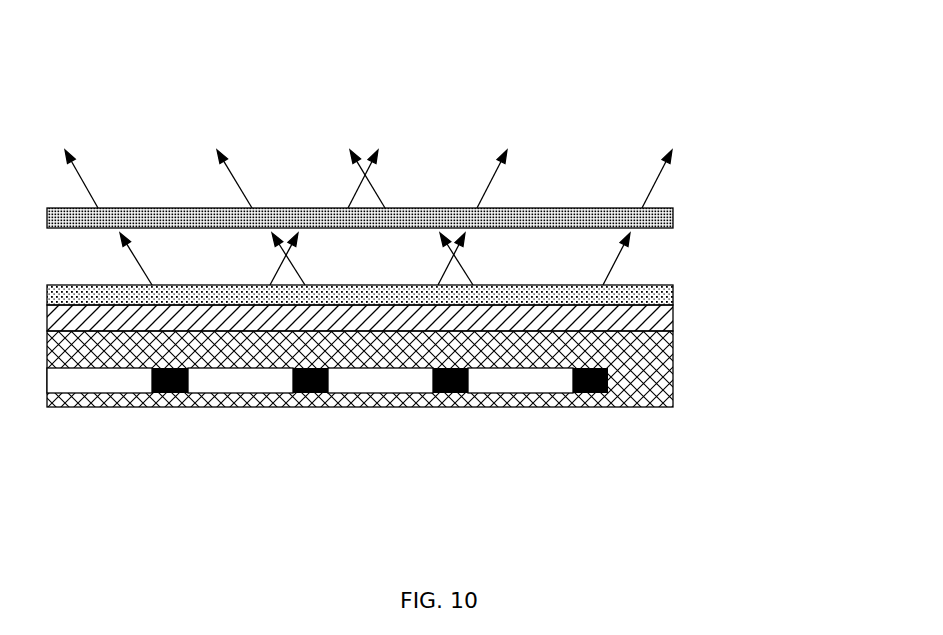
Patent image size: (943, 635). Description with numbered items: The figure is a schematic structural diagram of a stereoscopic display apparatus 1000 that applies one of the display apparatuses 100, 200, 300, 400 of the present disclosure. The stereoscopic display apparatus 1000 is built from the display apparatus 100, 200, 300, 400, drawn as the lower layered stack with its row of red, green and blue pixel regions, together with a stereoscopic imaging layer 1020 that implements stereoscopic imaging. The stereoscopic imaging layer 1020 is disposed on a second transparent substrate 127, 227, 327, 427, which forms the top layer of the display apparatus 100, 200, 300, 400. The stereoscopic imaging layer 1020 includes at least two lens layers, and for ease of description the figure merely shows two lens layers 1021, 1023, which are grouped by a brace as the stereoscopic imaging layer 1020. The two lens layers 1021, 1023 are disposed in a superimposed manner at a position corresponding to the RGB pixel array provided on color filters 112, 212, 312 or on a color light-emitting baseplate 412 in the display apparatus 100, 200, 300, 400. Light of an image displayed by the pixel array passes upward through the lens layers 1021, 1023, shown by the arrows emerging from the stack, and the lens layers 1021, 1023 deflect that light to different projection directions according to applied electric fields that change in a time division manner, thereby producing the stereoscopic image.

The stereoscopic display apparatus 1000 is at (397, 44).
The stereoscopic imaging layer 1020 is at (784, 234).
The lens layer 1021 is at (673, 216).
The lens layer 1023 is at (673, 290).
The display apparatus 100 is at (360, 403).
The display apparatus 200 is at (360, 403).
The display apparatus 300 is at (360, 403).
The display apparatus 400 is at (332, 407).
The second transparent substrate 127 is at (357, 435).
The second transparent substrate 227 is at (357, 435).
The second transparent substrate 327 is at (357, 435).
The second transparent substrate 427 is at (72, 372).
The light emitting element 112 is at (568, 435).
The color filter 212 is at (568, 435).
The color filter 312 is at (568, 435).
The color light-emitting baseplate 412 is at (533, 383).